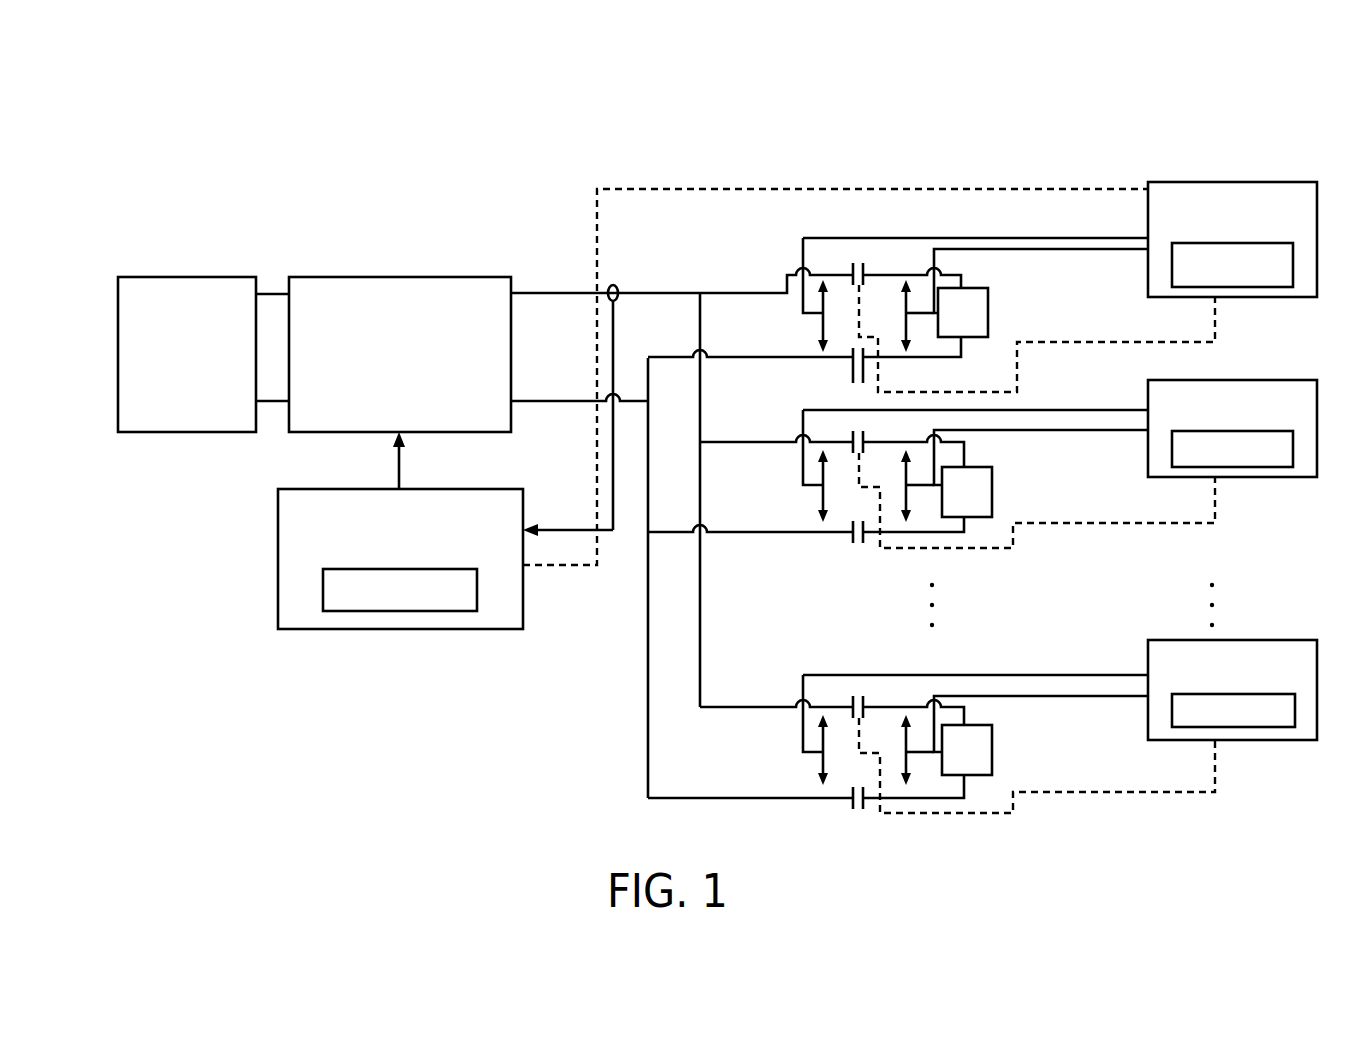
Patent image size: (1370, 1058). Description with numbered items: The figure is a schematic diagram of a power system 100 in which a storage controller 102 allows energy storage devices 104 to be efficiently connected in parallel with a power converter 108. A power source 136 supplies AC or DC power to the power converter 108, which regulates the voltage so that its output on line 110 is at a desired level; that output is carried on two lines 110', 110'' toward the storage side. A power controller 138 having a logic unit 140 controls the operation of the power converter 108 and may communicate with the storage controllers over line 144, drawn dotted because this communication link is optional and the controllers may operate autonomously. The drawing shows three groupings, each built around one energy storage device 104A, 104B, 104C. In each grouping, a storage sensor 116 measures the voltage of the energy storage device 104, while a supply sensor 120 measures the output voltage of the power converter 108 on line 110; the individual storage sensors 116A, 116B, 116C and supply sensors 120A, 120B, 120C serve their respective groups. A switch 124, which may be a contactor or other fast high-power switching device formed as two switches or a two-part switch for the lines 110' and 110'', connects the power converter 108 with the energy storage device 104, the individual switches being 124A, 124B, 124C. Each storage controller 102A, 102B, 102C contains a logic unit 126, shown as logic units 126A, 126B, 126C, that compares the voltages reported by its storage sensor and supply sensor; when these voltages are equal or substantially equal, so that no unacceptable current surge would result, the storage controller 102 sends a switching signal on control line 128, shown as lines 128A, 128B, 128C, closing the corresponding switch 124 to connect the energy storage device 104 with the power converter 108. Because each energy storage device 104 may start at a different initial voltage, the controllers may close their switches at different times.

The power system 100 is at (468, 67).
The storage controller 102 is at (1255, 221).
The storage controller 102A is at (1255, 235).
The storage controller 102B is at (1245, 468).
The storage controller 102C is at (1232, 697).
The energy storage device 104 is at (1025, 797).
The energy storage device 104A is at (988, 297).
The energy storage device 104B is at (992, 488).
The energy storage device 104C is at (992, 755).
The power converter 108 is at (372, 277).
The line 110 is at (682, 471).
The line 110' is at (682, 425).
The line 110'' is at (579, 578).
The storage sensor 116 is at (1052, 237).
The storage sensor 116A is at (1020, 247).
The storage sensor 116B is at (1022, 430).
The storage sensor 116C is at (978, 695).
The supply sensor 120 is at (975, 187).
The supply sensor 120A is at (970, 237).
The supply sensor 120B is at (803, 410).
The supply sensor 120C is at (803, 675).
The switch 124 is at (804, 290).
The switch 124A is at (851, 348).
The switch 124B is at (851, 455).
The switch 124C is at (851, 720).
The logic unit 126 is at (1267, 309).
The logic unit 126A is at (1257, 309).
The logic unit 126B is at (1215, 468).
The logic unit 126C is at (1247, 728).
The control line 128 is at (1068, 338).
The line 128A is at (1050, 343).
The line 128B is at (1085, 527).
The line 128C is at (1130, 793).
The power source 136 is at (190, 277).
The power controller 138 is at (448, 500).
The logic unit 140 is at (360, 611).
The line 144 is at (685, 188).